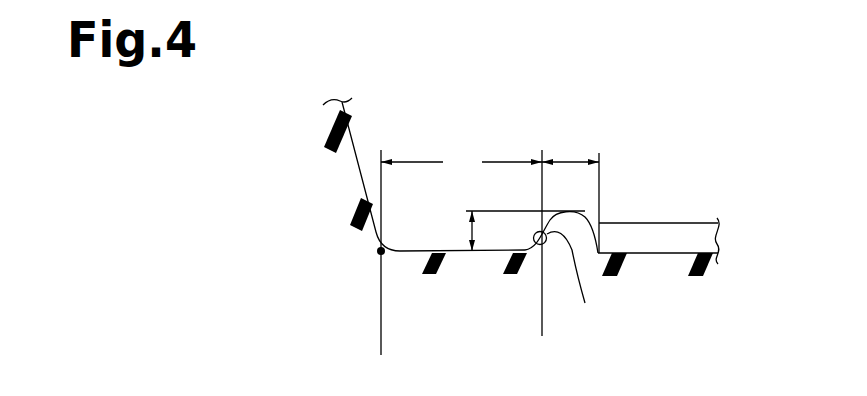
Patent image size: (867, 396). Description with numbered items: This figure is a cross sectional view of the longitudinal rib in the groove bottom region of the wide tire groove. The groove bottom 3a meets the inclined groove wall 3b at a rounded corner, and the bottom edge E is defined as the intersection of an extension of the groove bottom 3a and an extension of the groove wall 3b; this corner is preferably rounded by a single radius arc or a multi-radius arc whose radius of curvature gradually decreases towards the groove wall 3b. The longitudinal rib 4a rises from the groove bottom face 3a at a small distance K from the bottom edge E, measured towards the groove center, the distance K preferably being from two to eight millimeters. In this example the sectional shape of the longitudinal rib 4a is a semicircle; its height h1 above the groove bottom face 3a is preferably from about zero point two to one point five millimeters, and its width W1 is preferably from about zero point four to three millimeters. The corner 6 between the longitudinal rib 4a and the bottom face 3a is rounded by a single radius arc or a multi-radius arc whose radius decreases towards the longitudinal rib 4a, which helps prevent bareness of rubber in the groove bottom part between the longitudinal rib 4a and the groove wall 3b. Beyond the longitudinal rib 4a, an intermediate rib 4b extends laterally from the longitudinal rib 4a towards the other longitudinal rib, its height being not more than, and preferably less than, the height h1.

The groove bottom 3a is at (675, 253).
The groove wall 3b is at (350, 143).
The longitudinal rib 4a is at (588, 220).
The intermediate rib 4b is at (650, 223).
The corner 6 is at (565, 287).
The bottom edge E is at (378, 254).
The distance K is at (461, 164).
The width of the longitudinal rib W1 is at (570, 144).
The height of the longitudinal rib h1 is at (468, 232).